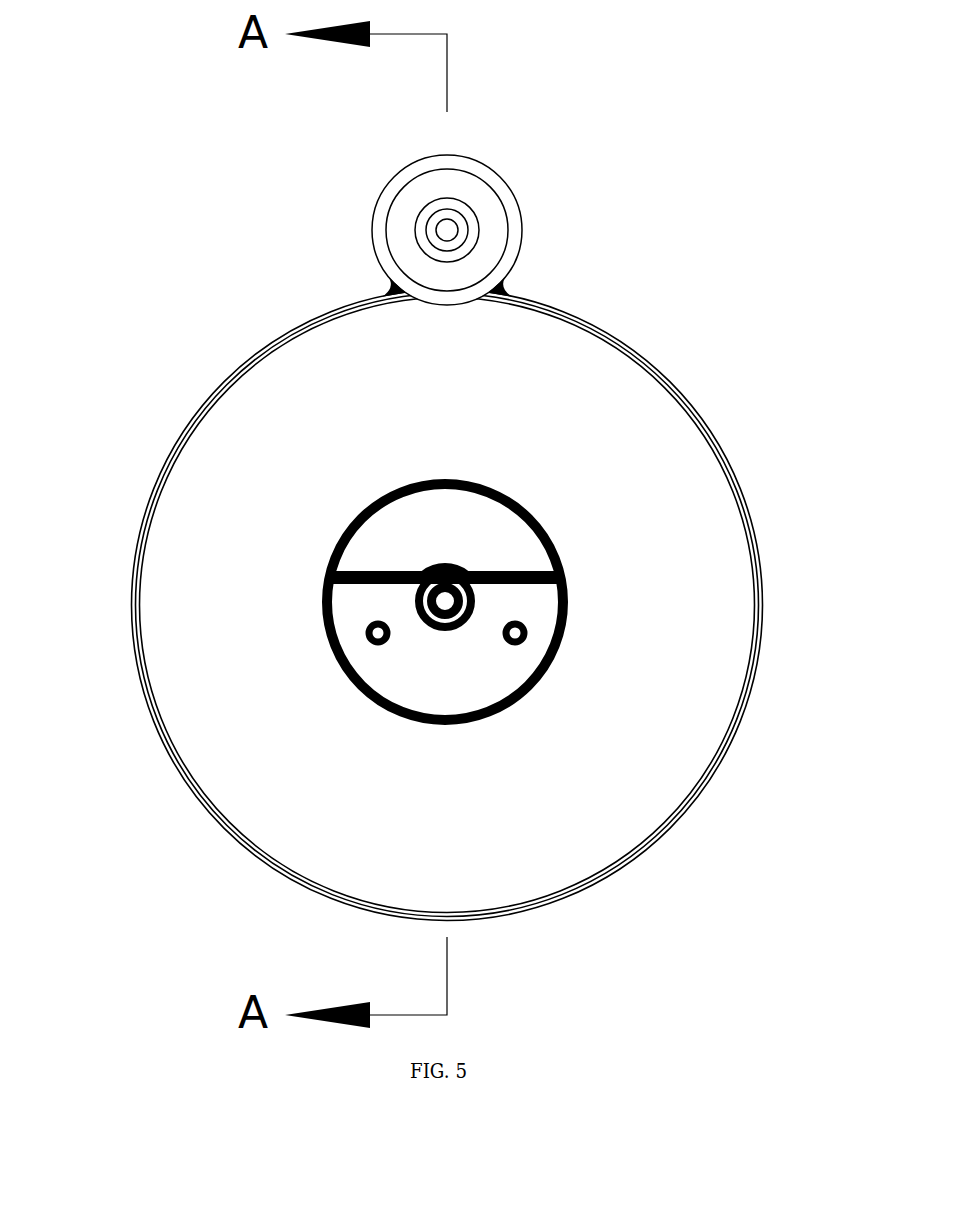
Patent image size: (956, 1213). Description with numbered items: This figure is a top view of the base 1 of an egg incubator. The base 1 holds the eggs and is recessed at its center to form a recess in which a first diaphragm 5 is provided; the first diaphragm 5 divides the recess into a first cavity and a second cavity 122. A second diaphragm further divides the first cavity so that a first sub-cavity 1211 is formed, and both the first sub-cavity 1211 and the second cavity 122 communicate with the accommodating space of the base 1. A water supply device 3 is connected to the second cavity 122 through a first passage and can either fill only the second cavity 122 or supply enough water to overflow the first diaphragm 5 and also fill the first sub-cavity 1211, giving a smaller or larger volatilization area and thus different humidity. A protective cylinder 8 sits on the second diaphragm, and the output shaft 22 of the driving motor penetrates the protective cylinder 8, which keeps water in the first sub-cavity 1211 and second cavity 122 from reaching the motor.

The base 1 is at (590, 363).
The water supply device 3 is at (522, 210).
The second cavity 122 is at (372, 543).
The first diaphragm 5 is at (533, 577).
The first sub-cavity 1211 is at (347, 618).
The protective cylinder 8 is at (465, 615).
The output shaft 22 is at (448, 614).